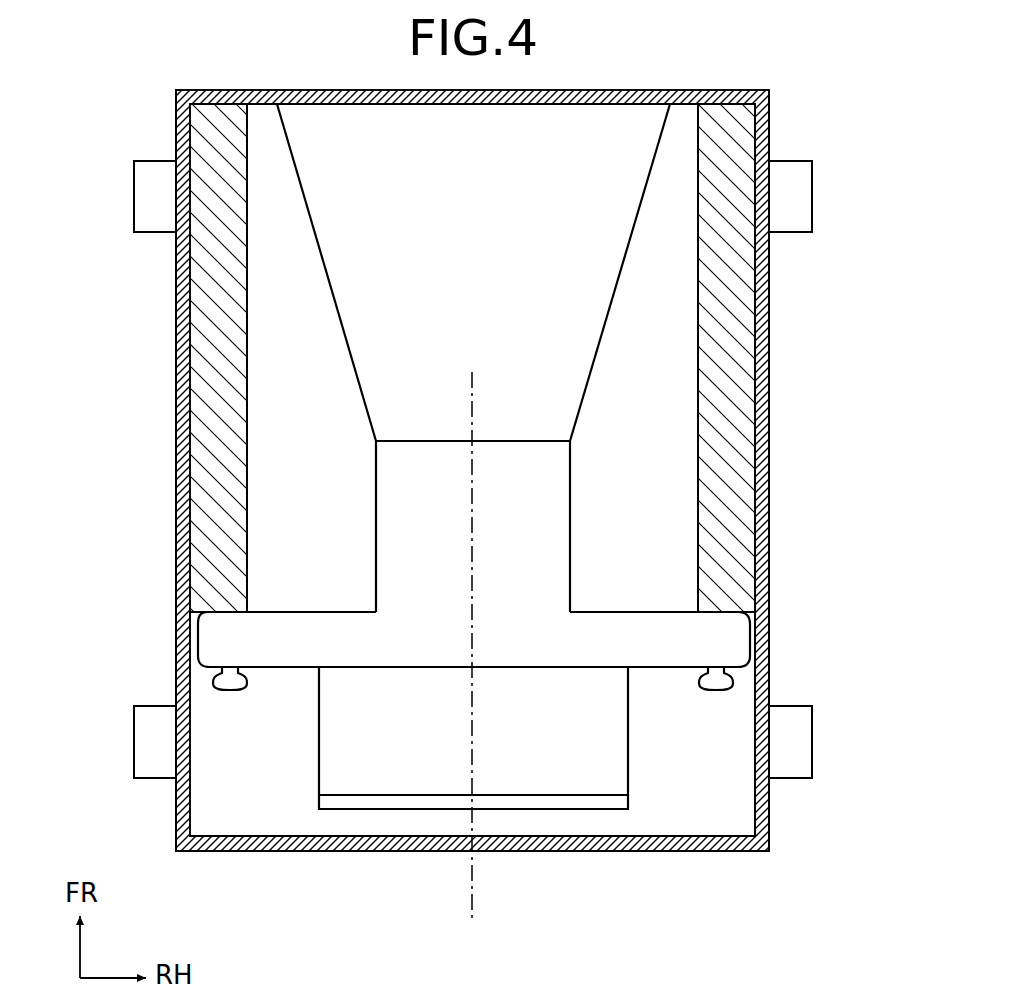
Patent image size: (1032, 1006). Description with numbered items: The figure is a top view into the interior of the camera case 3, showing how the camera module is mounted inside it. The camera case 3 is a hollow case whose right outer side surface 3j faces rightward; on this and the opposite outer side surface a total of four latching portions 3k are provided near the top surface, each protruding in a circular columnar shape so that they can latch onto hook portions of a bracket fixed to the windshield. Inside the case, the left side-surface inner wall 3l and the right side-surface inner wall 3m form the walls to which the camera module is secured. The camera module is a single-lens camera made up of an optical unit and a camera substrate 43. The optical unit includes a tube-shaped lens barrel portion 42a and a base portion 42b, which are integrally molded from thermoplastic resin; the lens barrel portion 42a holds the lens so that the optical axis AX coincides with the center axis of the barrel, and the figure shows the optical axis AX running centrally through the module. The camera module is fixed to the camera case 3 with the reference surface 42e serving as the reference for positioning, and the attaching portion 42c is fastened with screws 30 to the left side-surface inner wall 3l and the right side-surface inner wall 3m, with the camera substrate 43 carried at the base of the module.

The camera case 3 is at (772, 300).
The right outer side surface 3j is at (177, 393).
The latching portion 3k is at (148, 161).
The left side-surface inner wall 3l is at (248, 372).
The right side-surface inner wall 3m is at (697, 363).
The lens barrel portion 42a is at (376, 517).
The base portion 42b is at (657, 609).
The reference surface 42e is at (598, 609).
The attaching portion 42c is at (717, 616).
The camera substrate 43 is at (628, 807).
The screw 30 is at (234, 692).
The optical axis AX is at (474, 663).